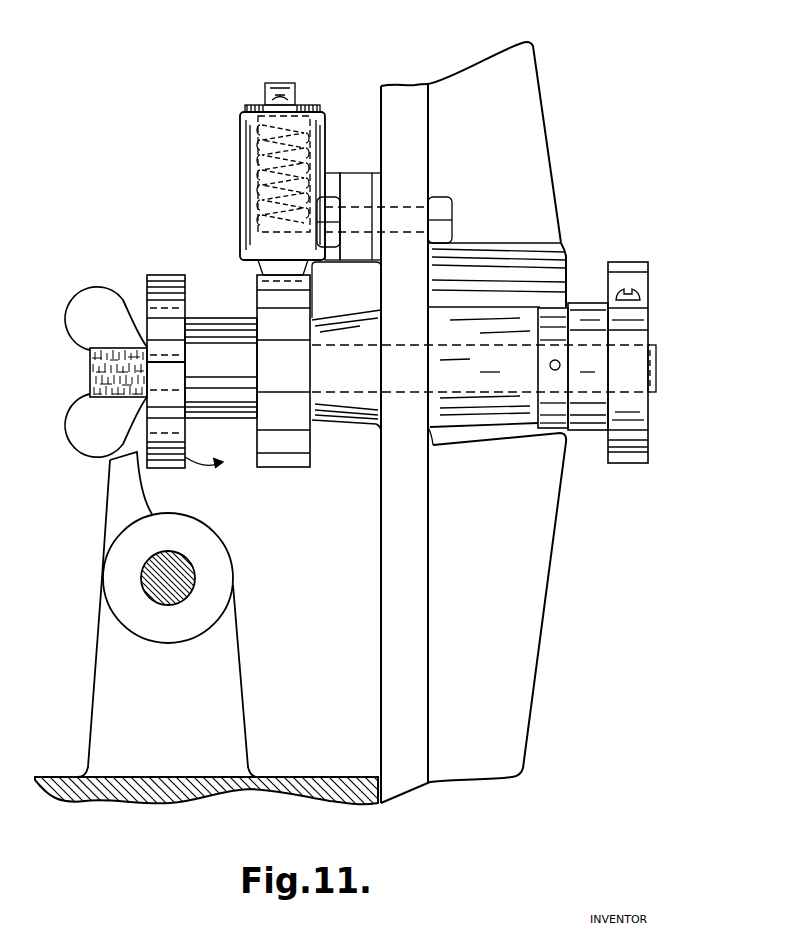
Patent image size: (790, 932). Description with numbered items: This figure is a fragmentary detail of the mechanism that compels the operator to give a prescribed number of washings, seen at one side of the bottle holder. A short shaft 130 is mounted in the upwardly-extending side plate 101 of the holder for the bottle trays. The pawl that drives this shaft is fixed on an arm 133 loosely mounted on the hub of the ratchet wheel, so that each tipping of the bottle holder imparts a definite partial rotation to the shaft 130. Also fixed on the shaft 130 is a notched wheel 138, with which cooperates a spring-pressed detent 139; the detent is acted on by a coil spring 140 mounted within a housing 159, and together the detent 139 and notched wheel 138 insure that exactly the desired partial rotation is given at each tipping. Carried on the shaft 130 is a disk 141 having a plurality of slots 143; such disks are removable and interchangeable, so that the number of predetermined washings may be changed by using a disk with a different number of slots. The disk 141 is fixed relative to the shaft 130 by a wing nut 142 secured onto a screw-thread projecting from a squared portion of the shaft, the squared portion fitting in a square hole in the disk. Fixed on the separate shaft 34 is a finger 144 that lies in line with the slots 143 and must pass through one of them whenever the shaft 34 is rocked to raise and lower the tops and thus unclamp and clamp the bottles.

The side plate 101 is at (551, 178).
The short shaft 130 is at (654, 368).
The arm 133 is at (595, 432).
The notched wheel 138 is at (280, 470).
The spring-pressed detent 139 is at (252, 268).
The coil spring 140 is at (263, 140).
The disk 141 is at (148, 273).
The wing nut 142 is at (72, 341).
The slots 143 is at (172, 371).
The finger 144 is at (112, 507).
The housing 159 is at (328, 120).
The shaft 34 is at (197, 587).